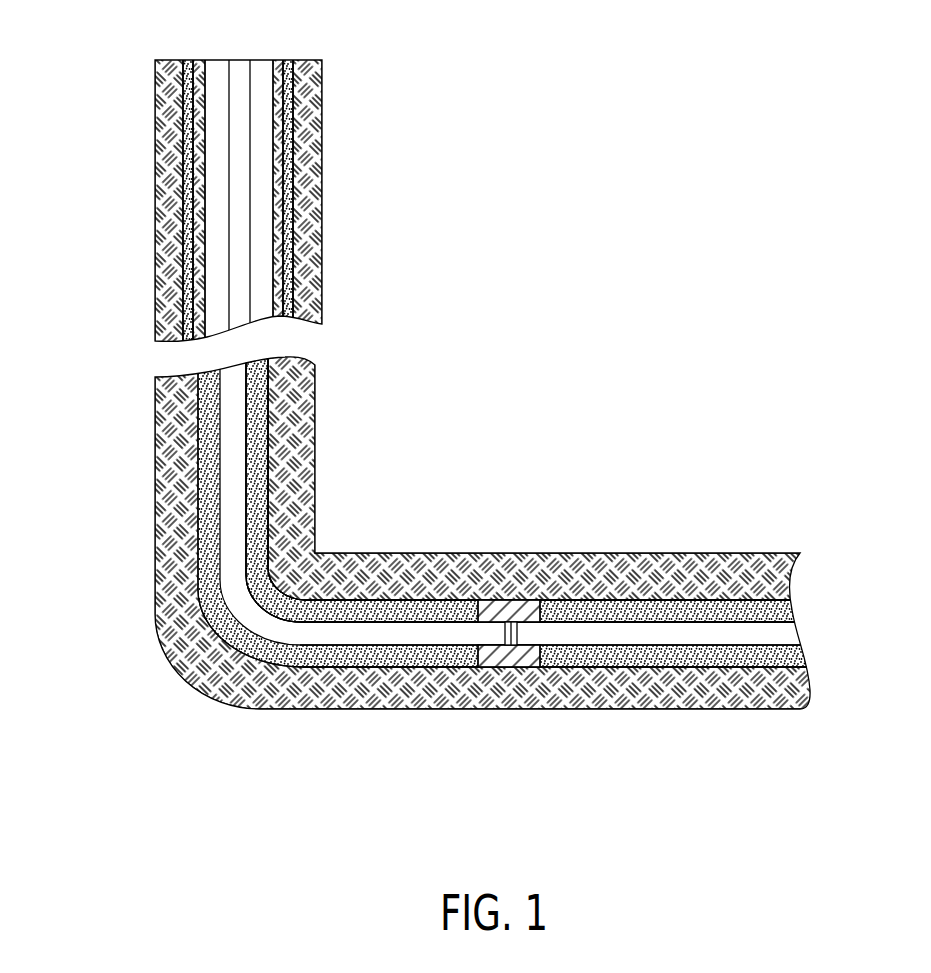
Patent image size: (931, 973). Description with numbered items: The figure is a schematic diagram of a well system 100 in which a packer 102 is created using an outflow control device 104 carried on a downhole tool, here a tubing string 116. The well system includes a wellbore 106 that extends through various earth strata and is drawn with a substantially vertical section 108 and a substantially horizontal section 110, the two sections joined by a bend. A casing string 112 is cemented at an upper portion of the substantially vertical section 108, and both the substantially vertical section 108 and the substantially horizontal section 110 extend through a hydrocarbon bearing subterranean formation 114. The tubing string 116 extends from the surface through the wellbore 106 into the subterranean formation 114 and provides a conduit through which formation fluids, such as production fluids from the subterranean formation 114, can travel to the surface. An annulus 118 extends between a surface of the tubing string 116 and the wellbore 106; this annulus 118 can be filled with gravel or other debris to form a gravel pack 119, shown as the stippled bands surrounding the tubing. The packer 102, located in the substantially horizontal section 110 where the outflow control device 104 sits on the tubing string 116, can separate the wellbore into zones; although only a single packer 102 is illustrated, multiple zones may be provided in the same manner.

The well system 100 is at (122, 86).
The packer 102 is at (500, 605).
The outflow control device 104 is at (513, 625).
The wellbore 106 is at (270, 410).
The substantially vertical section 108 is at (187, 222).
The substantially horizontal section 110 is at (598, 597).
The casing string 112 is at (278, 203).
The hydrocarbon bearing subterranean formation 114 is at (413, 565).
The tubing string 116 is at (245, 468).
The annulus 118 is at (410, 655).
The gravel pack 119 is at (722, 610).